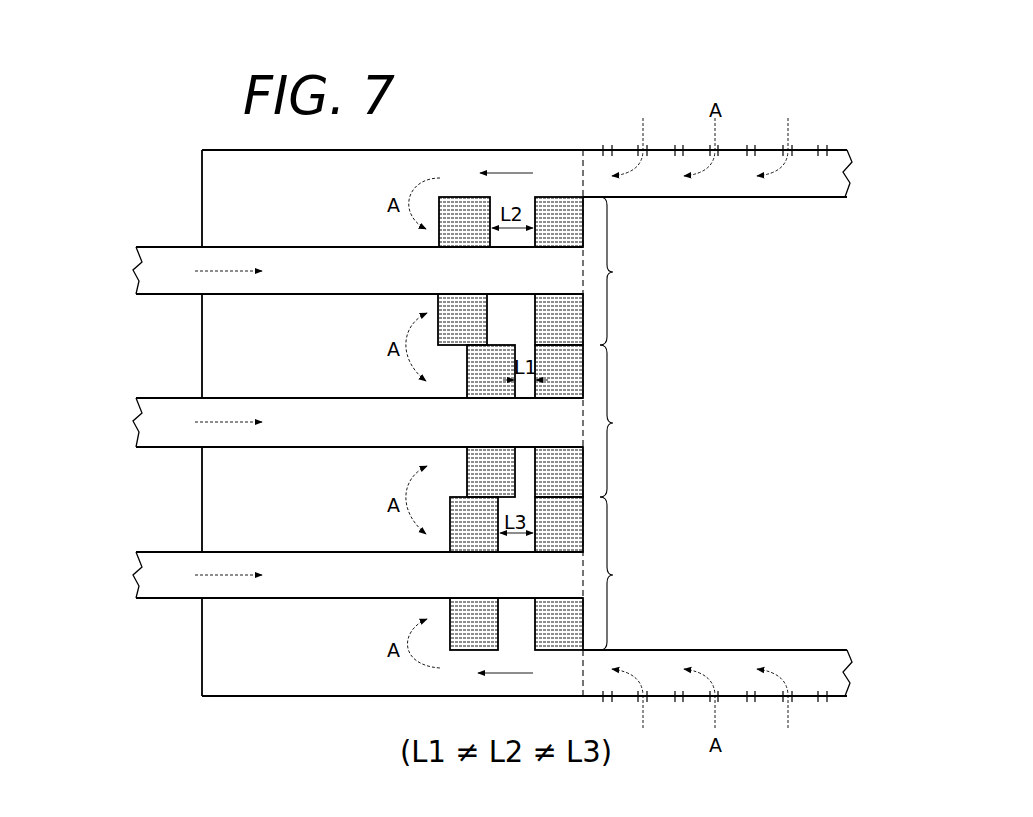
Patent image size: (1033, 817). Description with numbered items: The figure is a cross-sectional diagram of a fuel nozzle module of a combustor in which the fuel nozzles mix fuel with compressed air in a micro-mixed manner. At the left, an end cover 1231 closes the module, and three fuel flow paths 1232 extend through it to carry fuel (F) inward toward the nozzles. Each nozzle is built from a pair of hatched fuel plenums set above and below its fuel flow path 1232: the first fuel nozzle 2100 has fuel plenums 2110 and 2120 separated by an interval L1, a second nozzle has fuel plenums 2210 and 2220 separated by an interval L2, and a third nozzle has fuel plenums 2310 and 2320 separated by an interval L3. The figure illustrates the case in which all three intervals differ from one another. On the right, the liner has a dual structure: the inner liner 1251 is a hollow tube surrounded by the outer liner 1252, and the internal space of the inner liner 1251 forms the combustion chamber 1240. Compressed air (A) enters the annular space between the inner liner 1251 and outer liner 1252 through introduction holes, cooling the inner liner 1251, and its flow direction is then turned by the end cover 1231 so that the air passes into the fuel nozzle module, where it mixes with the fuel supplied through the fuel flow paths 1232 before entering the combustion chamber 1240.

The end cover 1231 is at (202, 190).
The fuel flow path 1232 is at (157, 275).
The combustion chamber 1240 is at (777, 436).
The inner liner 1251 is at (750, 198).
The outer liner 1252 is at (548, 150).
The first fuel nozzle 2100 is at (551, 423).
The fuel plenum 2110 is at (466, 461).
The fuel plenum 2120 is at (583, 460).
The fuel plenum 2210 is at (437, 314).
The fuel plenum 2220 is at (583, 318).
The fuel plenum 2310 is at (450, 609).
The fuel plenum 2320 is at (583, 610).